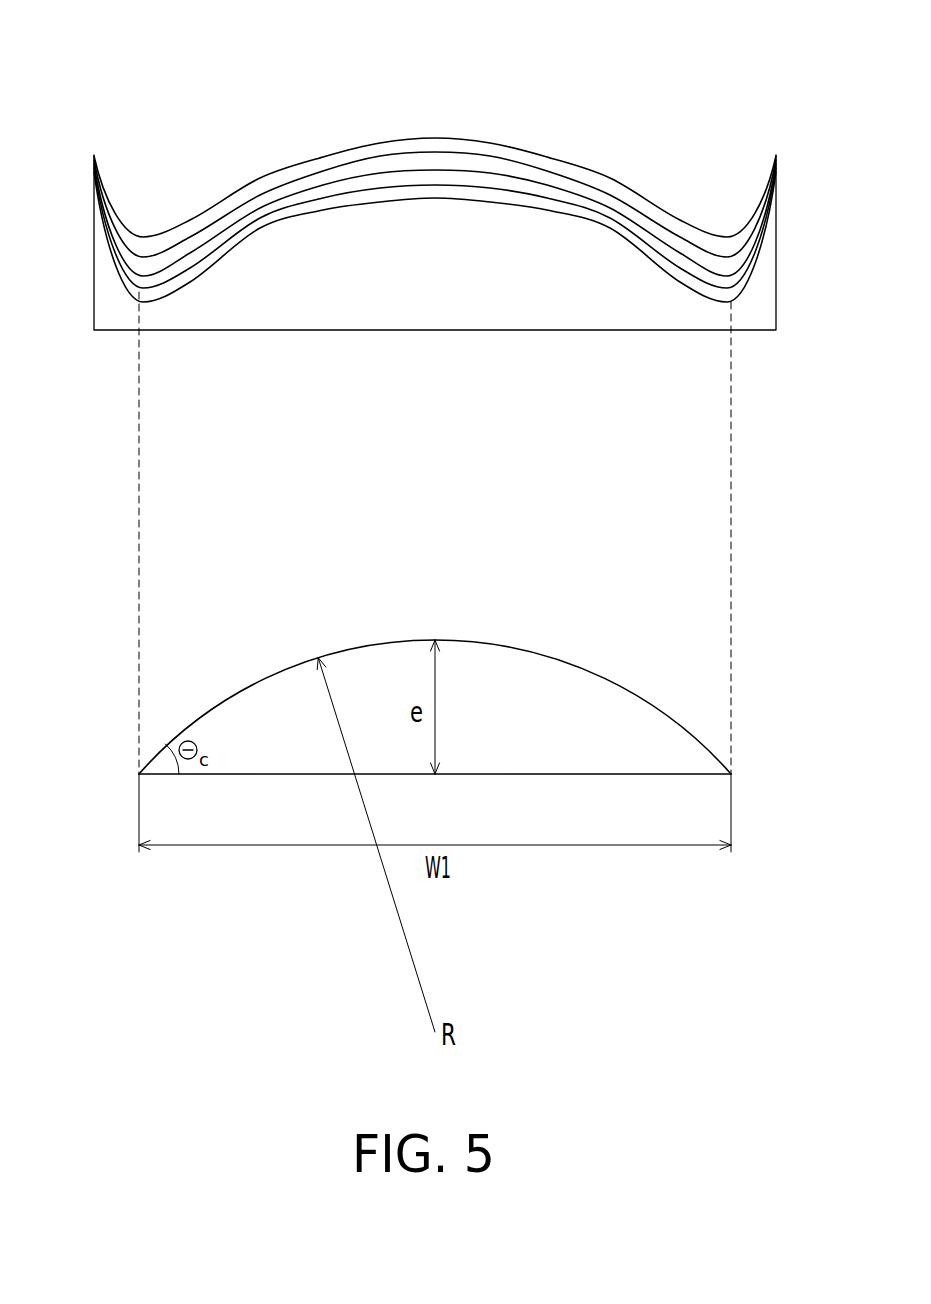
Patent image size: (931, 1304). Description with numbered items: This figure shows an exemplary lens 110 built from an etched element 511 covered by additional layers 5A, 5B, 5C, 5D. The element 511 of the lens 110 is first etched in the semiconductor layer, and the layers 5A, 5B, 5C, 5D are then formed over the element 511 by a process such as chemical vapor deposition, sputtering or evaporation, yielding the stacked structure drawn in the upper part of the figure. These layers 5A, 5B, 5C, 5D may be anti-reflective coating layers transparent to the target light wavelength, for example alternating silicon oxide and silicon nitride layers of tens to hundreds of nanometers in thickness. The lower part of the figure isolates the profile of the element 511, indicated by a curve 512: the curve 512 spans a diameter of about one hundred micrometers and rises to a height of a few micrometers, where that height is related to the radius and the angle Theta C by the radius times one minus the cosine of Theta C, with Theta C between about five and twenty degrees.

The lens 110 is at (455, 29).
The layer 5A is at (153, 295).
The layer 5B is at (212, 248).
The layer 5C is at (143, 262).
The layer 5D is at (323, 160).
The element 511 is at (607, 304).
The curve 512 is at (581, 666).